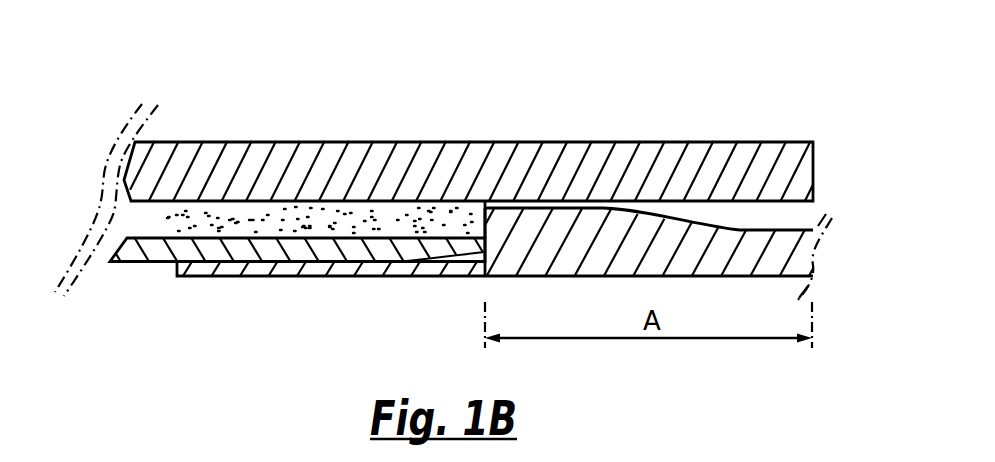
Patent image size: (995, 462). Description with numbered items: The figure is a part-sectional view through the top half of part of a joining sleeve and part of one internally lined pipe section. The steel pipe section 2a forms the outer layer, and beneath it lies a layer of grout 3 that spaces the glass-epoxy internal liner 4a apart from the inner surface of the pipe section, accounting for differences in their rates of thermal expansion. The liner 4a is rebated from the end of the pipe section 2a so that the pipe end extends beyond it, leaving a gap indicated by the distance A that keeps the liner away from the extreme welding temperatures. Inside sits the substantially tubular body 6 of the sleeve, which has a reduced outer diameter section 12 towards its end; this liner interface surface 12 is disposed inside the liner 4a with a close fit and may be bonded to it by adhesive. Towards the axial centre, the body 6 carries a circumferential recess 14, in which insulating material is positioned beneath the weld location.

The pipe section 2a is at (533, 141).
The layer of grout 3 is at (256, 212).
The internal liner 4a is at (145, 262).
The tubular body 6 is at (630, 238).
The reduced outer diameter section 12 is at (293, 265).
The circumferential recess 14 is at (750, 231).